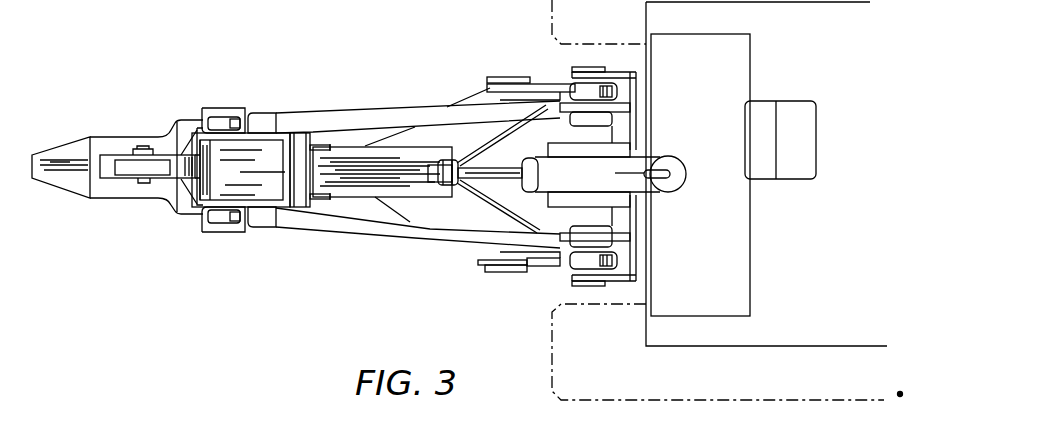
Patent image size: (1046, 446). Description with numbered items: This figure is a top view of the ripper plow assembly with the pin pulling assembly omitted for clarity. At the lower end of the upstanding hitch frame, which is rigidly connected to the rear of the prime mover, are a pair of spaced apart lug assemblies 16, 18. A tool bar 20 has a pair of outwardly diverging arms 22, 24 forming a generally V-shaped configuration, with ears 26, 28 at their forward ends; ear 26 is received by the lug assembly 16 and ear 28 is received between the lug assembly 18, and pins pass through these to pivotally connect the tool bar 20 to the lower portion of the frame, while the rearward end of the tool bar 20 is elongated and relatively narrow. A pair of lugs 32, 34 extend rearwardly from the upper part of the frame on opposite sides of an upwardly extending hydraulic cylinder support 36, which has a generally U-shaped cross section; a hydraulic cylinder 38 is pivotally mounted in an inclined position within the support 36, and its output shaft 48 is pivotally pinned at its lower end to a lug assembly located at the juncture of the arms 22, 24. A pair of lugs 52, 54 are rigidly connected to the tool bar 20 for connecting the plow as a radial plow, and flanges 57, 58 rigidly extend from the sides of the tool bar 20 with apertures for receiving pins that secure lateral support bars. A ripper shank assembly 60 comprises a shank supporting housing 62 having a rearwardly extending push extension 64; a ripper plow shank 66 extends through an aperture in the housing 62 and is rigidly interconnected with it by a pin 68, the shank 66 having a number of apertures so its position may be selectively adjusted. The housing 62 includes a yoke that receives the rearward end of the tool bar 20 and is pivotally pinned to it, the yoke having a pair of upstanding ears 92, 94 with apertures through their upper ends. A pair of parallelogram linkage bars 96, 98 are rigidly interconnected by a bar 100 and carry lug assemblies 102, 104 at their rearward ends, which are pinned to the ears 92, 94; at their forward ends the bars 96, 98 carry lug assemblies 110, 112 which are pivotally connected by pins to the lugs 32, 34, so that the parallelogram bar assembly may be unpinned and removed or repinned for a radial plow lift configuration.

The lug assembly 16 is at (590, 283).
The lug assembly 18 is at (585, 70).
The tool bar 20 is at (364, 148).
The arm 22 is at (475, 255).
The arm 24 is at (481, 100).
The ear 26 is at (617, 262).
The ear 28 is at (612, 91).
The lug 32 is at (617, 237).
The lug 34 is at (617, 107).
The hydraulic cylinder support 36 is at (620, 200).
The hydraulic cylinder 38 is at (640, 160).
The output shaft 48 is at (508, 168).
The lug 52 is at (322, 145).
The lug 54 is at (320, 200).
The flange 57 is at (492, 76).
The flange 58 is at (490, 275).
The ripper shank assembly 60 is at (137, 69).
The shank supporting housing 62 is at (107, 134).
The push extension 64 is at (60, 140).
The ripper plow shank 66 is at (127, 178).
The pin 68 is at (143, 147).
The ear 92 is at (222, 120).
The ear 94 is at (222, 224).
The parallelogram linkage bar 96 is at (410, 108).
The parallelogram linkage bar 98 is at (415, 240).
The bar 100 is at (300, 133).
The lug assembly 102 is at (258, 113).
The lug assembly 104 is at (266, 228).
The lug assembly 110 is at (548, 100).
The lug assembly 112 is at (548, 263).